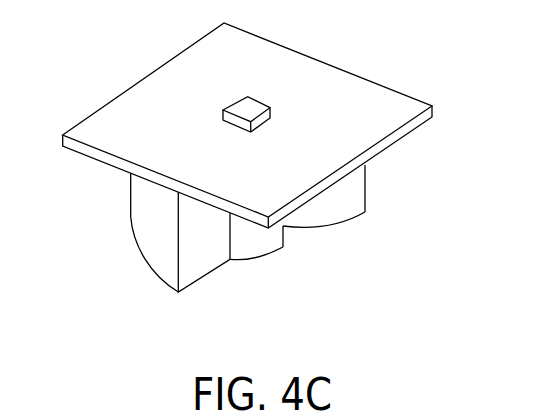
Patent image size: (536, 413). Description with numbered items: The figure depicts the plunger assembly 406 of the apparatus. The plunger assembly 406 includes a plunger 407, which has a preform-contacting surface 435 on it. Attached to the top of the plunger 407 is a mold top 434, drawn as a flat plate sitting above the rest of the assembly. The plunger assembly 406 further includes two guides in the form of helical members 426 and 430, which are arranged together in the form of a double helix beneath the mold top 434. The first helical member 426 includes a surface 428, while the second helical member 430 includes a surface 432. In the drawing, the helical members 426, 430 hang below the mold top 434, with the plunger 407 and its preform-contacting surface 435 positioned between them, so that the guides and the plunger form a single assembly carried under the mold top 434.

The plunger assembly 406 is at (77, 197).
The mold top 434 is at (135, 108).
The plunger 407 is at (260, 238).
The helical member 426 is at (148, 222).
The surface 428 is at (158, 277).
The helical member 430 is at (343, 193).
The surface 432 is at (335, 228).
The preform-contacting surface 435 is at (260, 262).